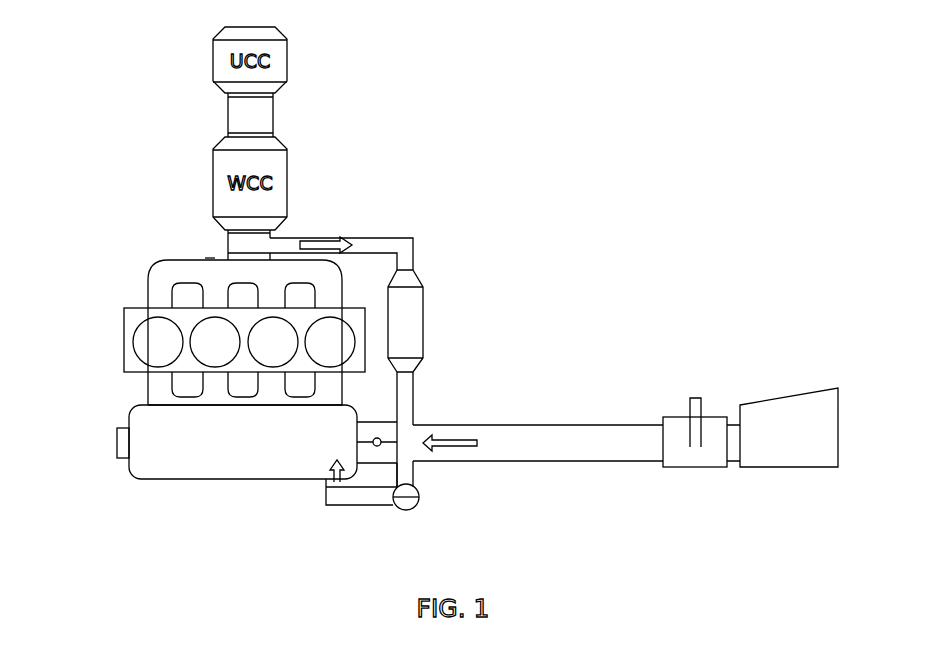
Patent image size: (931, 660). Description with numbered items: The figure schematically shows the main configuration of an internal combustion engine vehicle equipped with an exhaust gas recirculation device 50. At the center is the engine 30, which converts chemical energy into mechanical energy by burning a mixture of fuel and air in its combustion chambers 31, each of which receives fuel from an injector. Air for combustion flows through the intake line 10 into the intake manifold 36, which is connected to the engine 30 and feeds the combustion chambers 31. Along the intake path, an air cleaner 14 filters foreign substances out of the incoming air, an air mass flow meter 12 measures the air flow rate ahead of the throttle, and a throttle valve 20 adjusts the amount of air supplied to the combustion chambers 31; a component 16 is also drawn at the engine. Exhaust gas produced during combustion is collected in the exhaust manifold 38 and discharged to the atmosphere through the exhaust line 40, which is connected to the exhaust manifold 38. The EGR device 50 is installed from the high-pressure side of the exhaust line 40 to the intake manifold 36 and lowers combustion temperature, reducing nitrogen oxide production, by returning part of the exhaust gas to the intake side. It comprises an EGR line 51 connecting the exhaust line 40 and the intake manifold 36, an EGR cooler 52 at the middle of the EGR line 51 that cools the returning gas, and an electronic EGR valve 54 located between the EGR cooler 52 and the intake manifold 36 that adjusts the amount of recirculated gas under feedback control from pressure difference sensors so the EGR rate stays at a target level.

The intake line 10 is at (568, 425).
The air mass flow meter 12 is at (692, 398).
The air cleaner 14 is at (808, 402).
The oil drain / filler 16 is at (106, 447).
The throttle valve 20 is at (378, 457).
The engine 30 is at (199, 334).
The combustion chambers 31 is at (322, 320).
The intake manifold 36 is at (129, 470).
The exhaust manifold 38 is at (205, 258).
The exhaust line 40 is at (252, 242).
The exhaust gas recirculation device 50 is at (467, 354).
The EGR line 51 is at (413, 240).
The EGR cooler 52 is at (412, 319).
The electronic EGR valve 54 is at (420, 488).